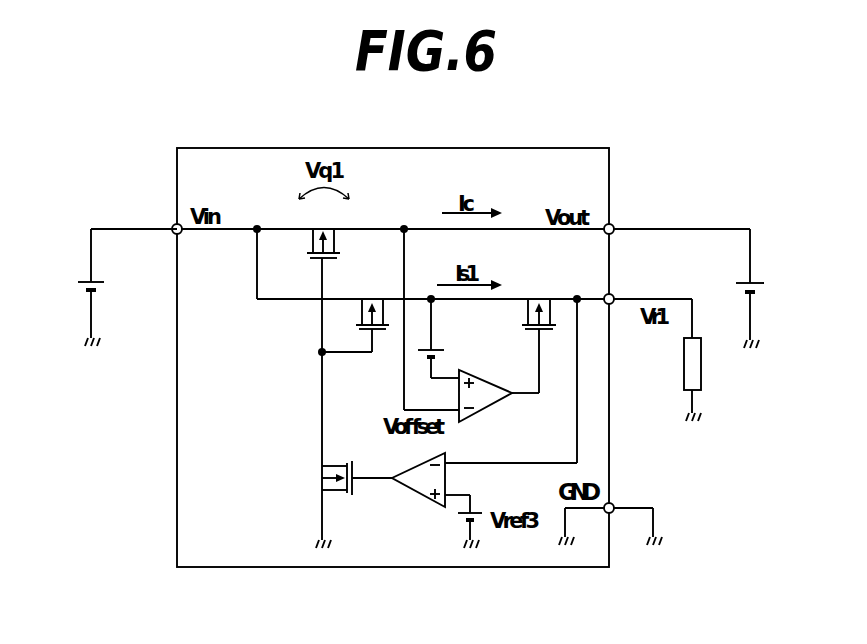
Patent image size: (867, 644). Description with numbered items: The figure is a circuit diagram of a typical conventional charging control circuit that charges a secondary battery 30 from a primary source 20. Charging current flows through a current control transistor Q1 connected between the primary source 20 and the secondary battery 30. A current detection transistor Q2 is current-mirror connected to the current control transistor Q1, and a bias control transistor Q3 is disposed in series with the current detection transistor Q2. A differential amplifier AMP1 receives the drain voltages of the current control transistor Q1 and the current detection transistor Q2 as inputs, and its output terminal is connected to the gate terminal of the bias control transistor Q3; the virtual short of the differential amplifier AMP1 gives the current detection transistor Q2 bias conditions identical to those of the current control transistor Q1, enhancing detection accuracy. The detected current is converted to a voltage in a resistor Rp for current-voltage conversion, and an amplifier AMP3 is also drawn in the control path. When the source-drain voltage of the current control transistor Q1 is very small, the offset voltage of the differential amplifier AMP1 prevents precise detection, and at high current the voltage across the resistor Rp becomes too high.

The primary source 20 is at (84, 280).
The secondary battery 30 is at (760, 280).
The current control transistor Q1 is at (323, 334).
The current detection transistor Q2 is at (355, 309).
The bias control transistor Q3 is at (539, 329).
The differential amplifier AMP1 is at (499, 386).
The error amplifier AMP3 is at (398, 474).
The resistor Rp is at (657, 360).